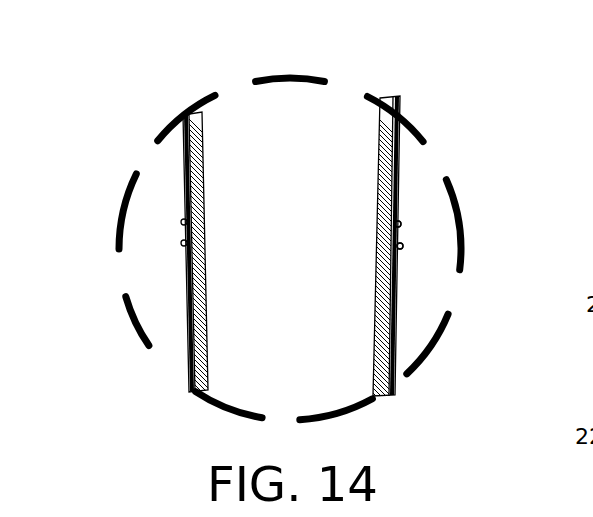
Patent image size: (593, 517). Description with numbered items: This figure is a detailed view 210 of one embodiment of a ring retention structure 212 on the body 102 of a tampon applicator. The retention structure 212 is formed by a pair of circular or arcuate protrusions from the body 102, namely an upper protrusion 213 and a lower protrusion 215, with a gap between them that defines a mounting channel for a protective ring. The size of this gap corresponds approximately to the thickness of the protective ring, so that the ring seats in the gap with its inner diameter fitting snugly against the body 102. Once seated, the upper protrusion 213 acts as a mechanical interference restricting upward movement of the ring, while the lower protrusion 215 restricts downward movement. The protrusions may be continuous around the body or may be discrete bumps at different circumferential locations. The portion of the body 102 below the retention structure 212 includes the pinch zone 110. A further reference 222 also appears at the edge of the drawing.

The detailed view 210 is at (188, 45).
The body 102 is at (388, 178).
The upper protrusion 213 is at (397, 223).
The ring retention structure 212 is at (427, 230).
The lower protrusion 215 is at (400, 247).
The pinch zone 110 is at (390, 318).
The housing 222 is at (592, 510).